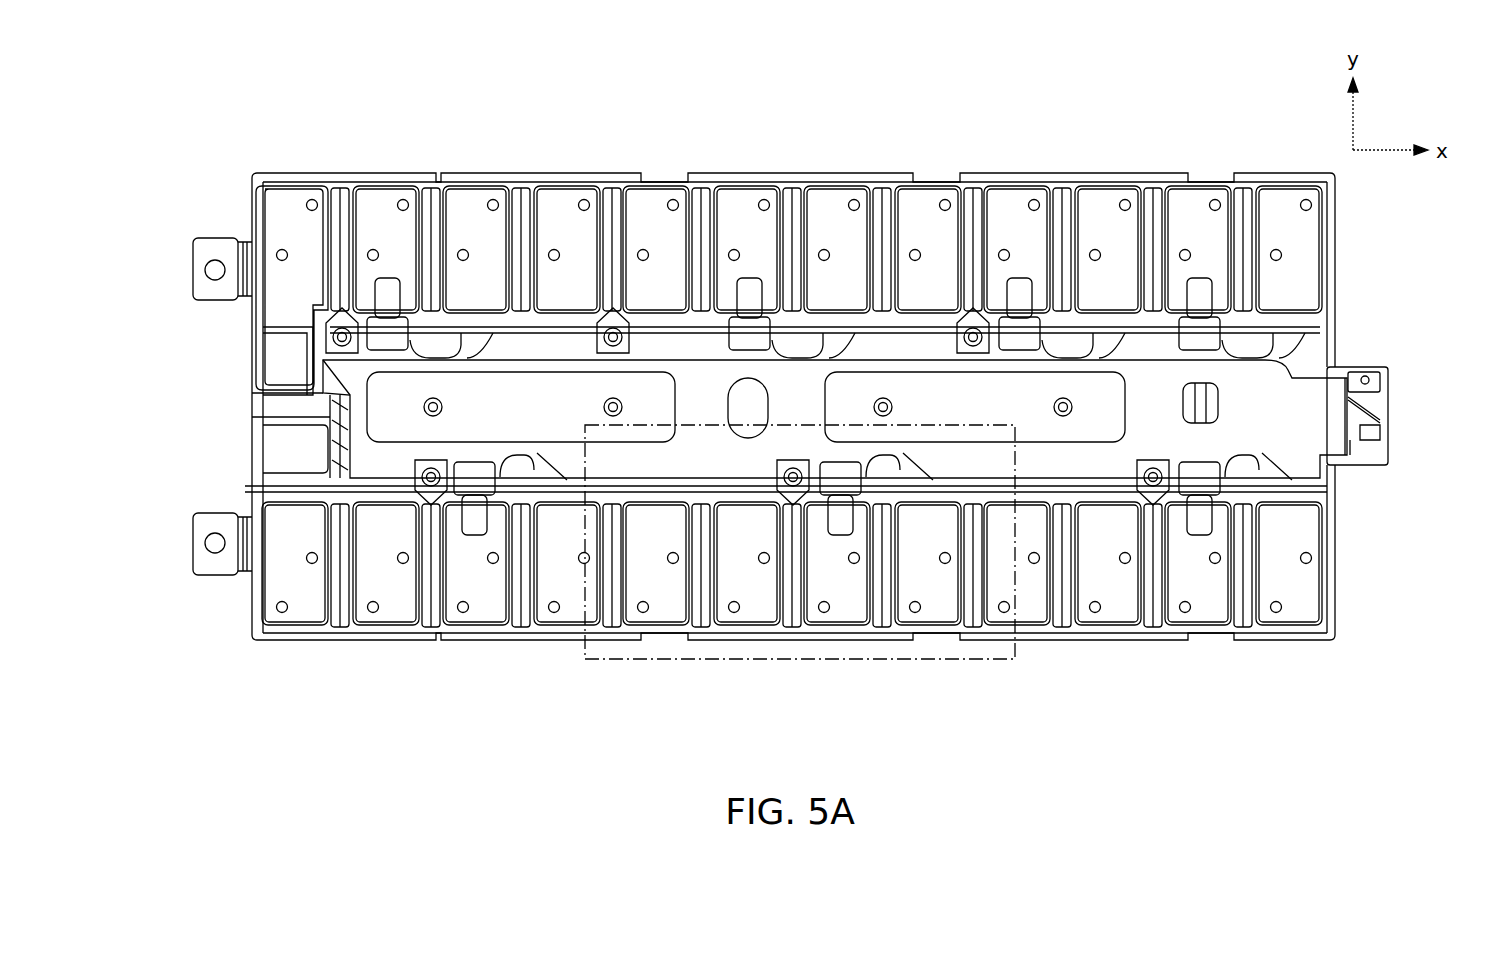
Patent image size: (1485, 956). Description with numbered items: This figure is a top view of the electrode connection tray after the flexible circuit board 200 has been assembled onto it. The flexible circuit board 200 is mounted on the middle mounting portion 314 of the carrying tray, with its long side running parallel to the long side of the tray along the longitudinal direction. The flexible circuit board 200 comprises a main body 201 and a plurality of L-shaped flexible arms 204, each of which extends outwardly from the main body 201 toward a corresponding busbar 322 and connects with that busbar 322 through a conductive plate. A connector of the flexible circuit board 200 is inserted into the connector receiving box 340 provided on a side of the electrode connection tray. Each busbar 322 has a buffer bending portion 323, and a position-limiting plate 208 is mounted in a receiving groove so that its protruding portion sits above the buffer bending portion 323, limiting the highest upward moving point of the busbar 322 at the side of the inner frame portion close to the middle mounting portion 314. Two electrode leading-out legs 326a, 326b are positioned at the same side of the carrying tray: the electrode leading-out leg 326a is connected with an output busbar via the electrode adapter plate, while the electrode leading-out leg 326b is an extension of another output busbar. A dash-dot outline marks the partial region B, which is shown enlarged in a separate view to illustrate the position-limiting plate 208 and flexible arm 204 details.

The flexible circuit board 200 is at (1292, 417).
The main body 201 is at (700, 400).
The L-shaped flexible arm 204 is at (900, 470).
The position-limiting plate 208 is at (798, 492).
The middle mounting portion 314 is at (566, 490).
The busbar 322 is at (927, 583).
The buffer bending portion 323 is at (793, 593).
The electrode leading-out leg 326a is at (192, 540).
The electrode leading-out leg 326b is at (192, 265).
The connector receiving box 340 is at (1388, 380).
The partial region B is at (980, 662).